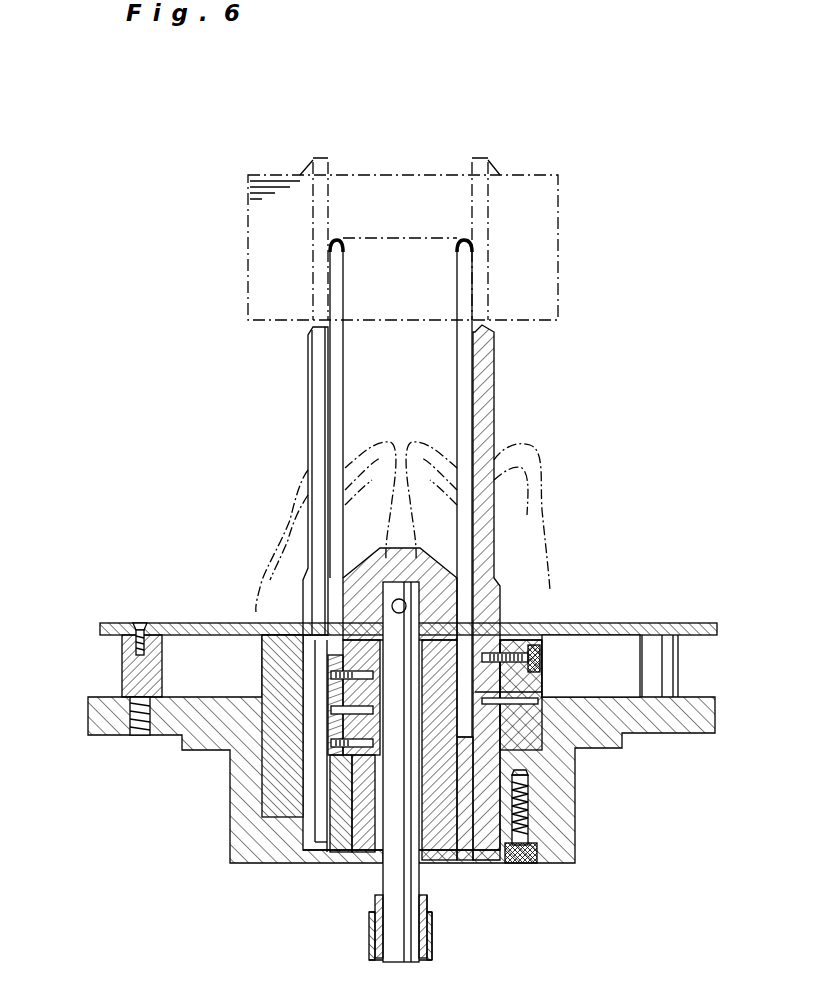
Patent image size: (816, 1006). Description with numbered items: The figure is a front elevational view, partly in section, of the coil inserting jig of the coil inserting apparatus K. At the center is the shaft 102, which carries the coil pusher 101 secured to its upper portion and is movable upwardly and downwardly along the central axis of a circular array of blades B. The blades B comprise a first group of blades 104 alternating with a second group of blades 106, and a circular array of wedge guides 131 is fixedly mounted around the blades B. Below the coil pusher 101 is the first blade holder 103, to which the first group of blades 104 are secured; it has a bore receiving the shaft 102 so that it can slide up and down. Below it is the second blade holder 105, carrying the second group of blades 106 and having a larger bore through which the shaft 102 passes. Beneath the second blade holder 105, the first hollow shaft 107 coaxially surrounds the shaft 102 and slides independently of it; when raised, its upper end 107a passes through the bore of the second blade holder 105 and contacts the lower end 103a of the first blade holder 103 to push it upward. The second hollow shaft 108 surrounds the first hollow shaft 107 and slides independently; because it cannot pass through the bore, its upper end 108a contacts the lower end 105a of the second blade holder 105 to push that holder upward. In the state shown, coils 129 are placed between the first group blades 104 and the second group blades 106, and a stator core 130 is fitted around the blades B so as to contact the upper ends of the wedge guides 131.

The stator core 130 is at (258, 243).
The second group of blades 106 is at (458, 275).
The first group of blades 104 is at (337, 300).
The wedge guides 131 is at (485, 405).
The coils 129 is at (508, 493).
The coil pusher 101 is at (450, 562).
The first blade holder 103 is at (442, 670).
The lower end of the first blade holder 103a is at (350, 764).
The second blade holder 105 is at (522, 787).
The lower end of the second blade holder 105a is at (455, 858).
The shaft 102 is at (385, 870).
The first hollow shaft 107 is at (372, 910).
The upper end of the first hollow shaft 107a is at (374, 893).
The second hollow shaft 108 is at (431, 943).
The upper end of the second hollow shaft 108a is at (431, 912).
The blades B is at (495, 366).
The coil inserting apparatus K is at (612, 420).